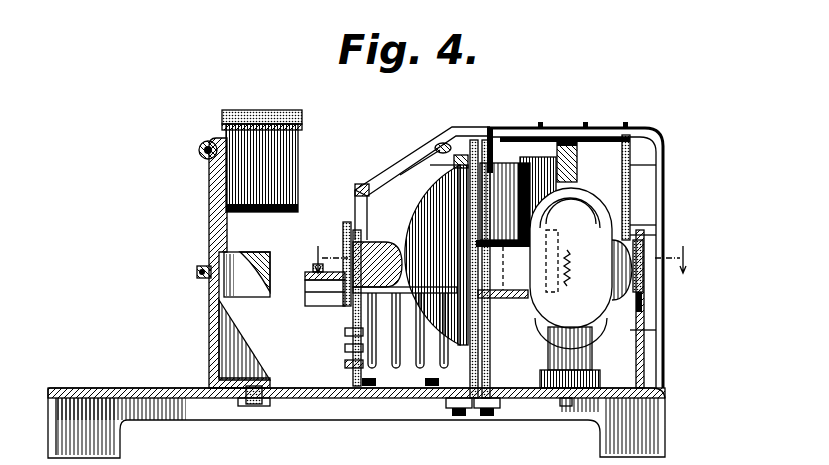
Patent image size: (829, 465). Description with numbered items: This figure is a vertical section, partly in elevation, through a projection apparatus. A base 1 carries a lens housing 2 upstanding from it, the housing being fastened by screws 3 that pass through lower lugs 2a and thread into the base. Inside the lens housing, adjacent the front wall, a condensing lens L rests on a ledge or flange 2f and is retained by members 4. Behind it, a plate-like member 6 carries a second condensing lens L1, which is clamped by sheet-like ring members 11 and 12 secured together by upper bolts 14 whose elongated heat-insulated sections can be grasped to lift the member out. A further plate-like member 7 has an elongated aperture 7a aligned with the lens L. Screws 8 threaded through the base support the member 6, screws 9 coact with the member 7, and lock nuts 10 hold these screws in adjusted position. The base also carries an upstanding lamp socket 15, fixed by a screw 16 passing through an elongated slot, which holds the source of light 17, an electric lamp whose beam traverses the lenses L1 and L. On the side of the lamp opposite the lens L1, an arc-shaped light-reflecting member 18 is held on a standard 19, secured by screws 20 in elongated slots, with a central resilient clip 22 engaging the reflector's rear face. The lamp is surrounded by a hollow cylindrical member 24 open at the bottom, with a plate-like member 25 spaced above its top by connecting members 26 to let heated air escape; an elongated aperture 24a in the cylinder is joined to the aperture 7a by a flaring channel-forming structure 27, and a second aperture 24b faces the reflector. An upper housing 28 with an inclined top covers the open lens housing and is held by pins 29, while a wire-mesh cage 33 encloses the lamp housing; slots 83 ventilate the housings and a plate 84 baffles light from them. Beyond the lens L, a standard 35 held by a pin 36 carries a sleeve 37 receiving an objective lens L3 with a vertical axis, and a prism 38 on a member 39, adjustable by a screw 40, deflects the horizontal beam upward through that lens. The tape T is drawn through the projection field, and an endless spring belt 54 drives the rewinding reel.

The base 1 is at (125, 388).
The lens housing 2 is at (352, 347).
The lower lugs 2a is at (400, 409).
The ledge or flange 2f is at (456, 286).
The screws 3 is at (362, 382).
The members 4 is at (345, 409).
The plate-like member 6 is at (456, 158).
The plate-like member 7 is at (480, 160).
The elongated aperture 7a is at (458, 250).
The screws 8 is at (458, 414).
The screws 9 is at (488, 414).
The lock nuts 10 is at (456, 403).
The ring member 11 is at (440, 146).
The ring member 12 is at (464, 160).
The upper bolts 14 is at (434, 202).
The lamp socket 15 is at (556, 350).
The screw 16 is at (575, 400).
The source of light 17 is at (576, 216).
The light-reflecting member 18 is at (640, 250).
The standard 19 is at (646, 352).
The screws 20 is at (632, 427).
The resilient clip 22 is at (646, 266).
The hollow cylindrical member 24 is at (630, 200).
The elongated aperture 24a is at (516, 202).
The second elongated aperture 24b is at (570, 258).
The plate-like member 25 is at (516, 136).
The connecting members 26 is at (574, 160).
The passage or channel-forming structure 27 is at (485, 292).
The upper housing 28 is at (380, 182).
The pins 29 is at (348, 228).
The cage 33 is at (605, 130).
The standard 35 is at (212, 320).
The pin 36 is at (258, 402).
The sleeve 37 is at (300, 153).
The prism 38 is at (268, 256).
The member 39 is at (226, 283).
The screw 40 is at (205, 272).
The endless spring belt 54 is at (350, 364).
The apertures or slots 83 is at (355, 331).
The plate 84 is at (366, 186).
The condensing lens L is at (384, 242).
The condensing lens L1 is at (419, 185).
The objective lens L3 is at (235, 178).
The tape T is at (344, 256).